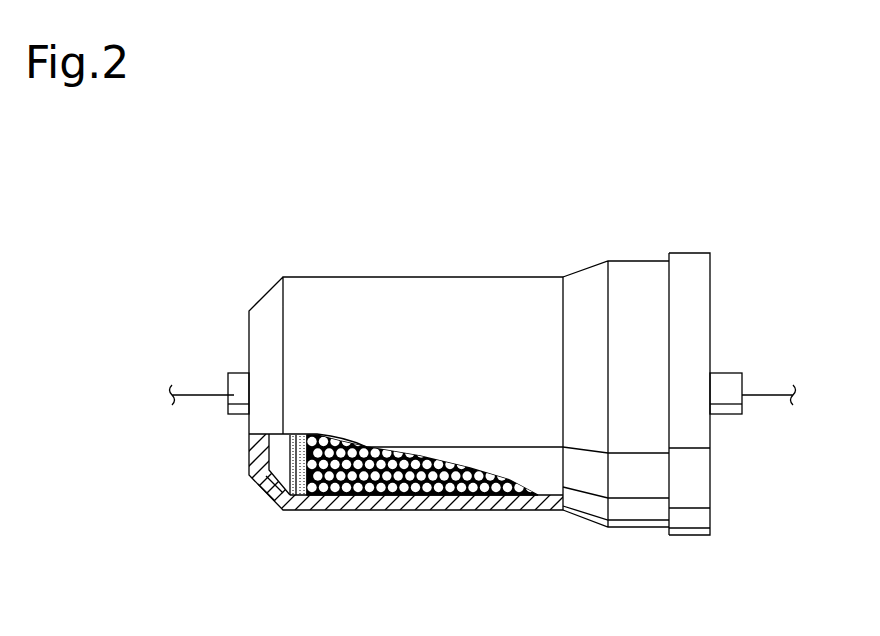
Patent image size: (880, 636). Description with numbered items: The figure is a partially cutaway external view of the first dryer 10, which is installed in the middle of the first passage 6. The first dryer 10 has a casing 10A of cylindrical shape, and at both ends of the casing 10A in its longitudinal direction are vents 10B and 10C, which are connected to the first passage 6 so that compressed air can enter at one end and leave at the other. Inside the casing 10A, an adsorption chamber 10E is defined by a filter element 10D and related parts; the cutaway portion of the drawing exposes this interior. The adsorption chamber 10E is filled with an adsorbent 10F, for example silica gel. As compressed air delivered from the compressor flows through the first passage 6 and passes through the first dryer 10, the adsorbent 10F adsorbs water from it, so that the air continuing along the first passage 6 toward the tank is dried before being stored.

The first dryer 10 is at (404, 266).
The first passage 6 is at (199, 393).
The casing 10A is at (417, 500).
The vent 10B is at (232, 402).
The vent 10C is at (730, 404).
The filter element 10D is at (264, 490).
The adsorption chamber 10E is at (300, 482).
The adsorbent 10F is at (378, 470).